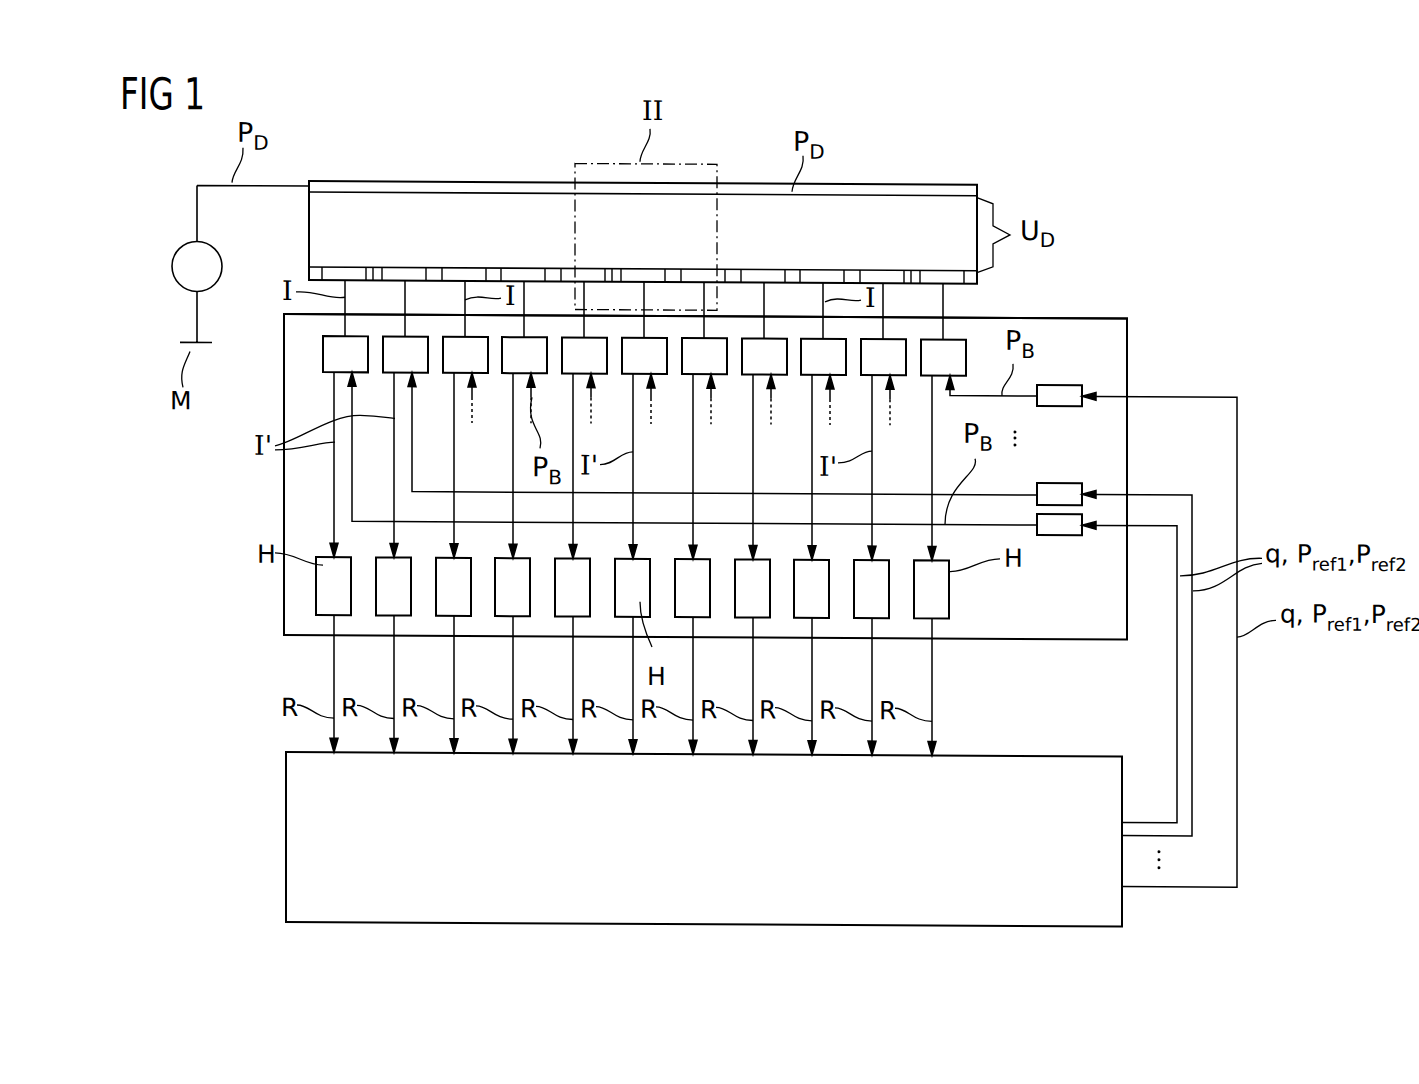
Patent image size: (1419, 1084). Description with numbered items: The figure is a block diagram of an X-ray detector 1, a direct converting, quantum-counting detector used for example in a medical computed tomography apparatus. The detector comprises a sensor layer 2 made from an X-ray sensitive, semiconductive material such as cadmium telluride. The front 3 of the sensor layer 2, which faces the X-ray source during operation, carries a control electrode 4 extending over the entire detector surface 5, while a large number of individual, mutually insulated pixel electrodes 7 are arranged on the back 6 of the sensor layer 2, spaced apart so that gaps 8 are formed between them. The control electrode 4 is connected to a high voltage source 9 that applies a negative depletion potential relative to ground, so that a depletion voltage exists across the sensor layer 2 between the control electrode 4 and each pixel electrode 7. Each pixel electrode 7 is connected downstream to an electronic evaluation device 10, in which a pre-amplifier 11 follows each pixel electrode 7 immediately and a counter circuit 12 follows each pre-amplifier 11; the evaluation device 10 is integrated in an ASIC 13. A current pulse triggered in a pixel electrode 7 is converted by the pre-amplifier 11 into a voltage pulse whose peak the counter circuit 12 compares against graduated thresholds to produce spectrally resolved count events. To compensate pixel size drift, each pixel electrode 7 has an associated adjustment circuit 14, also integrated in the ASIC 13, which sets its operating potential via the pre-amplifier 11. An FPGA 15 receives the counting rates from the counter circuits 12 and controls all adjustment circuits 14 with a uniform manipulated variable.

The X-ray detector 1 is at (1095, 202).
The sensor layer 2 is at (866, 210).
The front 3 is at (380, 180).
The control electrode 4 is at (948, 189).
The detector surface 5 is at (643, 275).
The back 6 is at (955, 289).
The pixel electrodes 7 is at (342, 267).
The gaps 8 is at (377, 267).
The voltage source 9 is at (172, 267).
The electronic evaluation device 10 is at (300, 496).
The pre-amplifier 11 is at (400, 334).
The counter circuit 12 is at (316, 600).
The ASIC 13 is at (1100, 314).
The adjustment circuit 14 is at (1057, 381).
The FPGA 15 is at (286, 840).